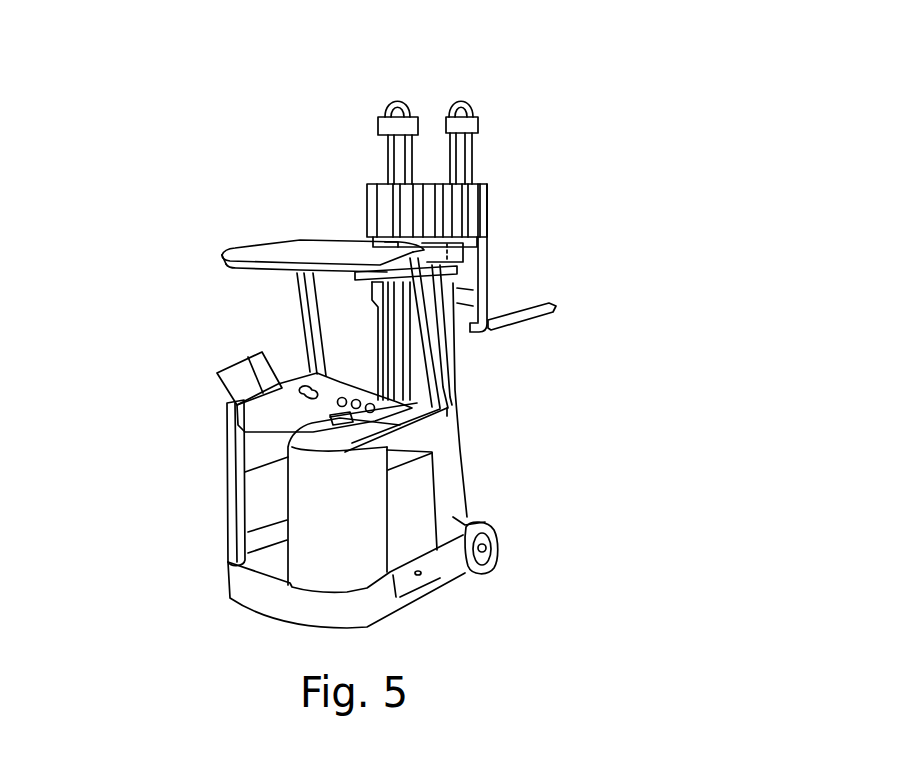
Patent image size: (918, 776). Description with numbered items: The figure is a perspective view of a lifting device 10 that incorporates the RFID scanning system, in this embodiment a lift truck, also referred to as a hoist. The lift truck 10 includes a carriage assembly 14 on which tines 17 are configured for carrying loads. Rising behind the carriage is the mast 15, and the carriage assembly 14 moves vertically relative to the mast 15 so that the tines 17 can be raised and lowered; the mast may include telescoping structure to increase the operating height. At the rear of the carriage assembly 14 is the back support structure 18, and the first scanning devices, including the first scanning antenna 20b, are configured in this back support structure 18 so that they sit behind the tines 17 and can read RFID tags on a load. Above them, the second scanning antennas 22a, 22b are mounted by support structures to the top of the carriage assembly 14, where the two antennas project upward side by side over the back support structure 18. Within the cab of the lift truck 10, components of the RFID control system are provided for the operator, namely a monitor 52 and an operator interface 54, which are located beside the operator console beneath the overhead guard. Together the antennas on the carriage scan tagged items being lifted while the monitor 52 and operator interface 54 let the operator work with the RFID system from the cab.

The lifting device 10 is at (618, 108).
The carriage assembly 14 is at (543, 243).
The mast 15 is at (453, 397).
The tines 17 is at (510, 325).
The back support structure 18 is at (487, 184).
The first scanning antenna 20b is at (453, 245).
The second scanning antenna 22a is at (378, 128).
The second scanning antenna 22b is at (473, 117).
The monitor 52 is at (229, 402).
The operator interface 54 is at (262, 356).